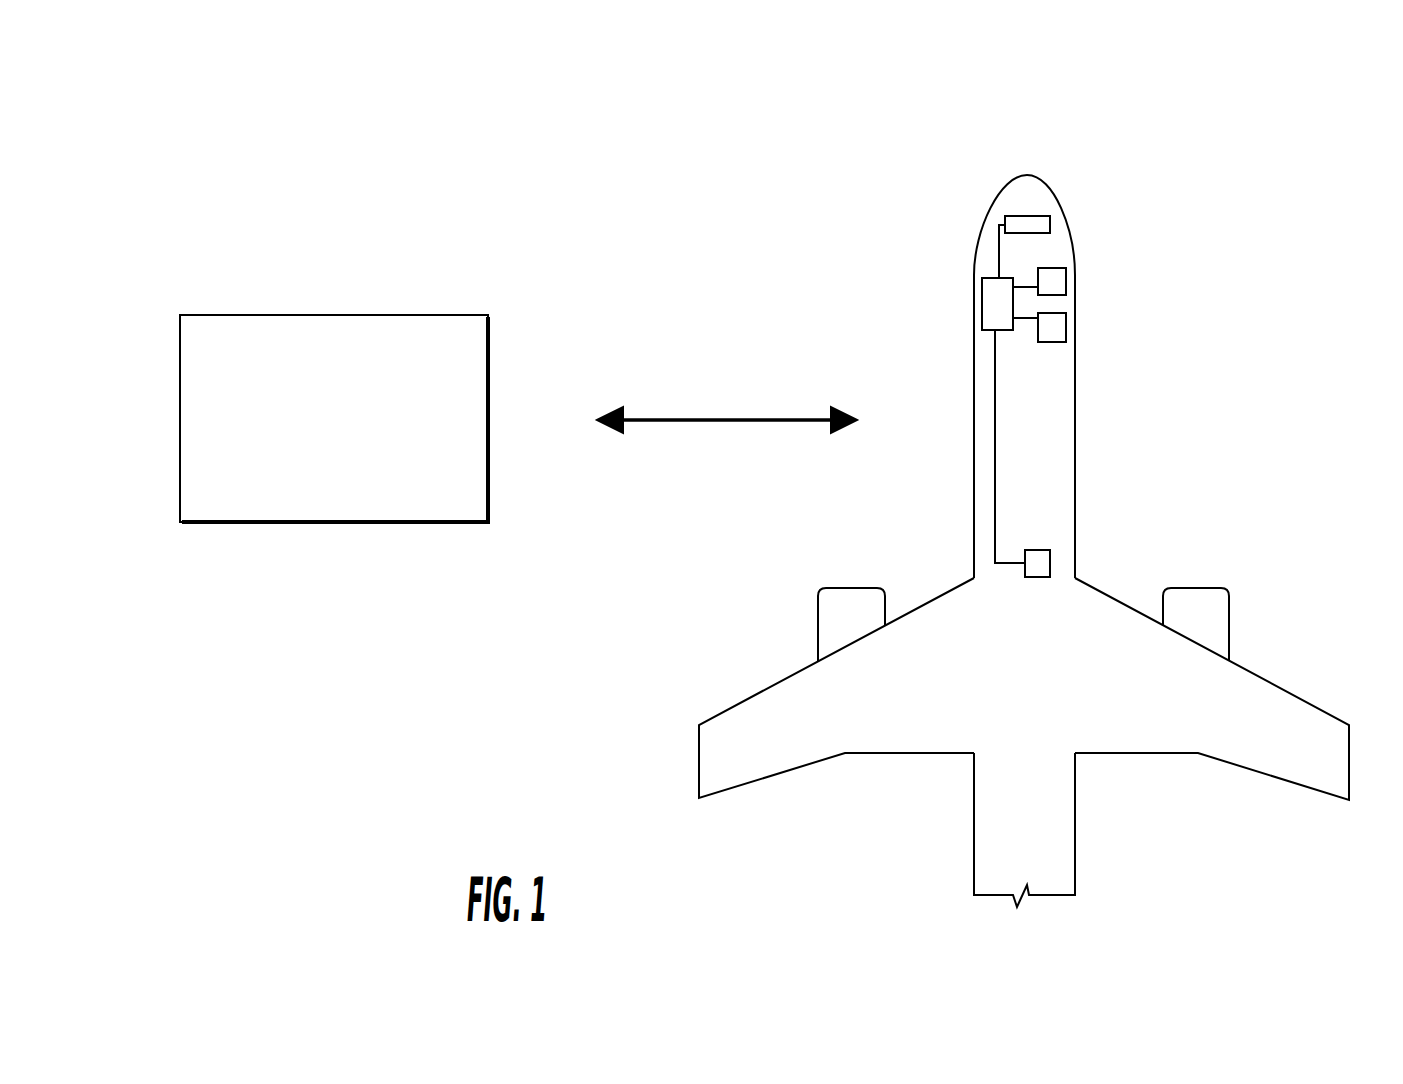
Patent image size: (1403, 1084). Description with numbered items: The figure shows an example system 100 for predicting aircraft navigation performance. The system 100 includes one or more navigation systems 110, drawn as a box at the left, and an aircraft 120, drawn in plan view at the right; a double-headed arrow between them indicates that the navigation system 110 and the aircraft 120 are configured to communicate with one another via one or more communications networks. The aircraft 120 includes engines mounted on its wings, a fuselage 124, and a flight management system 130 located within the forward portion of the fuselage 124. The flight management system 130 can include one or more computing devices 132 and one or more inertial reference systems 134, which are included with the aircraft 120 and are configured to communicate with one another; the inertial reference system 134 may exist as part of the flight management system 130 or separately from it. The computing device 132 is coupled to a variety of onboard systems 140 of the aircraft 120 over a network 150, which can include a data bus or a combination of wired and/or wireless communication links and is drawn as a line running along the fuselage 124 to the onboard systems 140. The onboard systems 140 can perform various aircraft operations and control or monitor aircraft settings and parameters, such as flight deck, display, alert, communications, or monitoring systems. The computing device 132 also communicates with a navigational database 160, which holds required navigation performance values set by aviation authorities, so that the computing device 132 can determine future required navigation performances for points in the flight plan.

The system 100 is at (284, 129).
The navigation system 110 is at (360, 433).
The aircraft 120 is at (1212, 388).
The fuselage 124 is at (1057, 484).
The flight management system 130 is at (1041, 256).
The computing device 132 is at (988, 278).
The inertial reference system 134 is at (1060, 285).
The onboard system 140 is at (1037, 220).
The network 150 is at (995, 455).
The navigational database 160 is at (1057, 338).